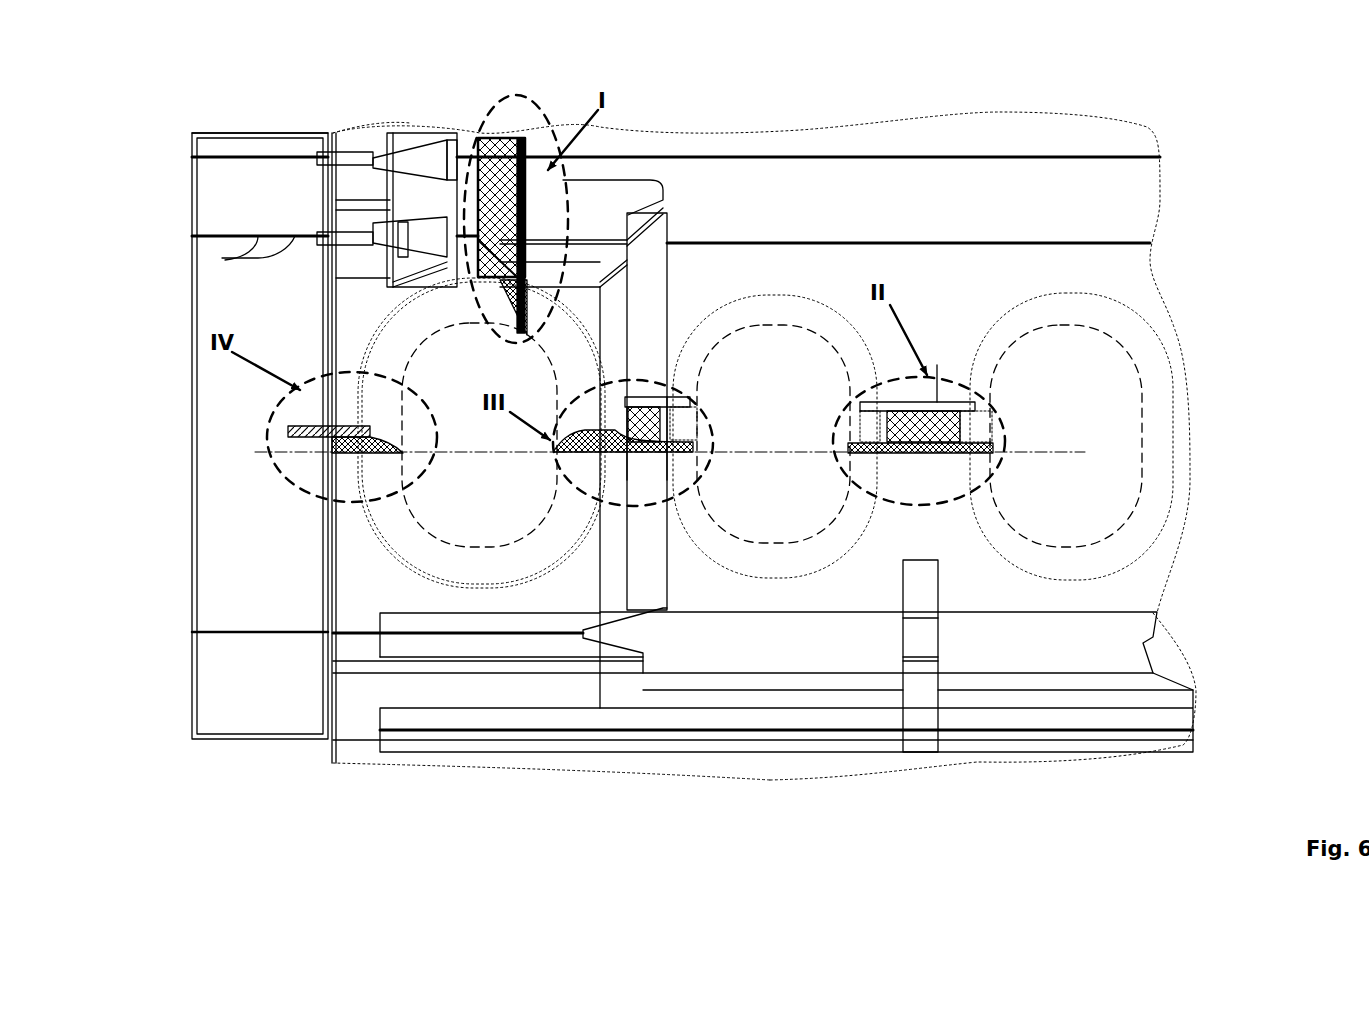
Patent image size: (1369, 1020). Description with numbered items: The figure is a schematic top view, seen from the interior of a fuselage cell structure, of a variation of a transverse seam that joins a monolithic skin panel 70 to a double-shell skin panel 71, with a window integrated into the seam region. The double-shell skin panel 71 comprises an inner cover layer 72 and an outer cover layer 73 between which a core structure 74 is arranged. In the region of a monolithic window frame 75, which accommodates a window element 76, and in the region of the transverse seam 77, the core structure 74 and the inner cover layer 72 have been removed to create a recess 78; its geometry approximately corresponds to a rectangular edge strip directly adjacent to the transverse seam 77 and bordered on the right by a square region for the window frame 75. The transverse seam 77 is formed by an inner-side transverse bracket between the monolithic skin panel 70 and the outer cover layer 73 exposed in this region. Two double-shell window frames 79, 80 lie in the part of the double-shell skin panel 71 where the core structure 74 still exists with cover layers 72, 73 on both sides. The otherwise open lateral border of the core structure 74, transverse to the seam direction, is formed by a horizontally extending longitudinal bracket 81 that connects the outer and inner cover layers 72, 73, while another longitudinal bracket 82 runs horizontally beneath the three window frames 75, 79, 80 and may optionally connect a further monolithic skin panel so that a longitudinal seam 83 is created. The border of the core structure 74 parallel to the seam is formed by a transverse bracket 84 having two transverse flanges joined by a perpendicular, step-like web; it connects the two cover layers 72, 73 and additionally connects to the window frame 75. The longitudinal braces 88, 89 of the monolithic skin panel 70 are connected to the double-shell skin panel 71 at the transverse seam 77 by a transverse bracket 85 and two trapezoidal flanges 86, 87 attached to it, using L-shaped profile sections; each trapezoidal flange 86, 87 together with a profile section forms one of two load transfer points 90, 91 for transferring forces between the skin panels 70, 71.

The monolithic skin panel 70 is at (227, 203).
The double-shell skin panel 71 is at (1125, 262).
The inner cover layer 72 is at (480, 140).
The outer cover layer 73 is at (357, 567).
The core structure 74 is at (500, 145).
The monolithic window frame 75 is at (443, 553).
The window element 76 is at (479, 435).
The transverse seam 77 is at (318, 125).
The recess 78 is at (363, 264).
The double-shell window frame 79 is at (750, 565).
The double-shell window frame 80 is at (1080, 567).
The longitudinal bracket 81 is at (585, 385).
The longitudinal bracket 82 is at (997, 640).
The longitudinal seam 83 is at (1220, 695).
The transverse bracket 84 is at (645, 395).
The transverse bracket 85 is at (407, 150).
The trapezoidal flange 86 is at (435, 150).
The trapezoidal flange 87 is at (470, 150).
The longitudinal brace 88 is at (252, 150).
The longitudinal brace 89 is at (253, 232).
The load transfer point 90 is at (372, 150).
The load transfer point 91 is at (350, 253).